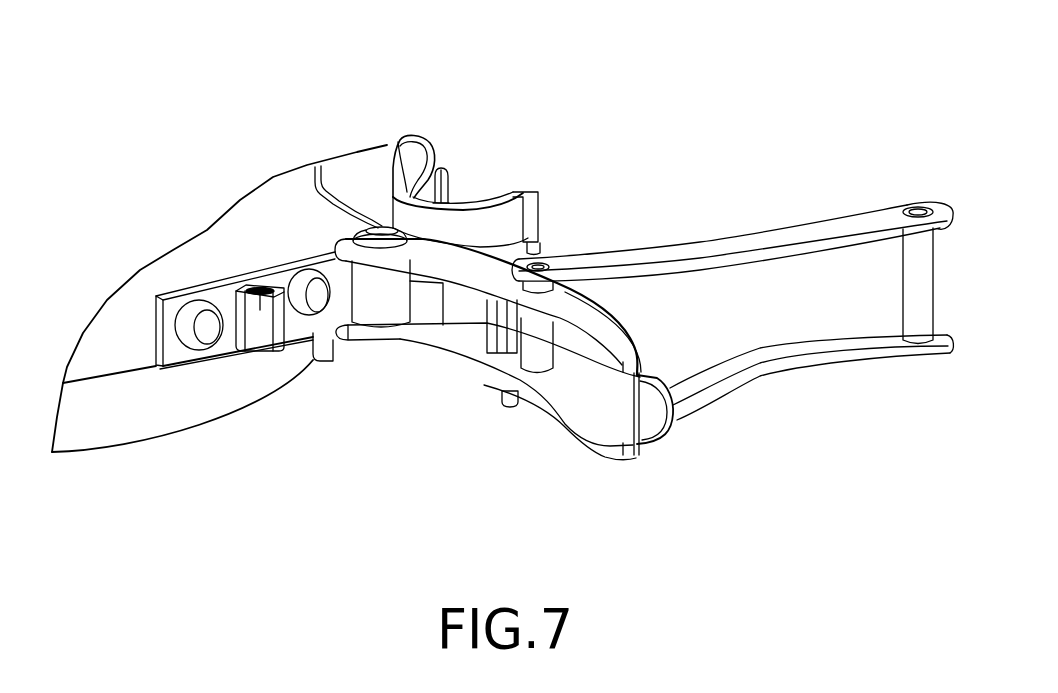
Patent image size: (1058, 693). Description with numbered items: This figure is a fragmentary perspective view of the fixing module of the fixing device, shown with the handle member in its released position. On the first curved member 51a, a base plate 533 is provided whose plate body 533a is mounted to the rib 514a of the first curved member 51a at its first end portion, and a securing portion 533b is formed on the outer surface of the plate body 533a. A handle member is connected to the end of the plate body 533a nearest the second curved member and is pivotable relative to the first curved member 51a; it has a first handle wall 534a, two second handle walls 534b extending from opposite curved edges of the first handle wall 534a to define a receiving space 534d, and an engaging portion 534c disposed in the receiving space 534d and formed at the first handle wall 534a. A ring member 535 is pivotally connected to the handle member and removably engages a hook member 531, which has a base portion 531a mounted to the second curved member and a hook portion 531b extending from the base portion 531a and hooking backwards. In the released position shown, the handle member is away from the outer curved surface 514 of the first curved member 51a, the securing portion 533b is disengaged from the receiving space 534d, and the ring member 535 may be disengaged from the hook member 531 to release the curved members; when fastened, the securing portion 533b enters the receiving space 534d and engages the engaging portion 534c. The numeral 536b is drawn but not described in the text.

The first curved member 51a is at (120, 323).
The outer curved surface 514 is at (185, 408).
The rib 514a is at (112, 362).
The base plate 533 is at (254, 114).
The plate body 533a is at (222, 293).
The securing portion 533b is at (261, 305).
The hook member 531 is at (538, 62).
The base portion 531a is at (422, 147).
The hook portion 531b is at (525, 192).
The first handle wall 534a is at (627, 395).
The second handle walls 534b is at (592, 360).
The engaging portion 534c is at (500, 322).
The receiving space 534d is at (430, 333).
The ring member 535 is at (842, 227).
The pivot pin end 536b is at (518, 408).